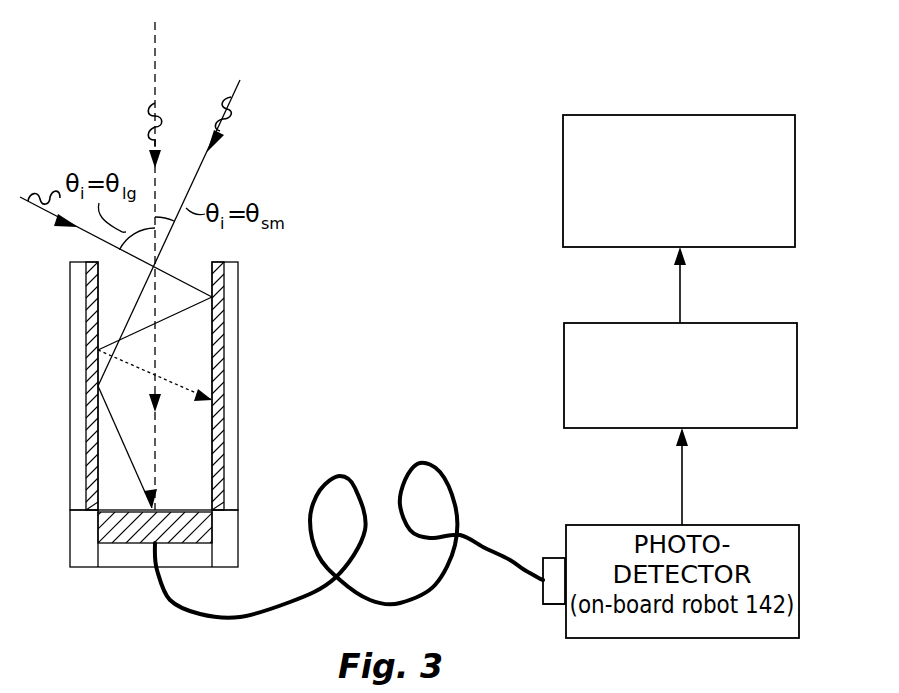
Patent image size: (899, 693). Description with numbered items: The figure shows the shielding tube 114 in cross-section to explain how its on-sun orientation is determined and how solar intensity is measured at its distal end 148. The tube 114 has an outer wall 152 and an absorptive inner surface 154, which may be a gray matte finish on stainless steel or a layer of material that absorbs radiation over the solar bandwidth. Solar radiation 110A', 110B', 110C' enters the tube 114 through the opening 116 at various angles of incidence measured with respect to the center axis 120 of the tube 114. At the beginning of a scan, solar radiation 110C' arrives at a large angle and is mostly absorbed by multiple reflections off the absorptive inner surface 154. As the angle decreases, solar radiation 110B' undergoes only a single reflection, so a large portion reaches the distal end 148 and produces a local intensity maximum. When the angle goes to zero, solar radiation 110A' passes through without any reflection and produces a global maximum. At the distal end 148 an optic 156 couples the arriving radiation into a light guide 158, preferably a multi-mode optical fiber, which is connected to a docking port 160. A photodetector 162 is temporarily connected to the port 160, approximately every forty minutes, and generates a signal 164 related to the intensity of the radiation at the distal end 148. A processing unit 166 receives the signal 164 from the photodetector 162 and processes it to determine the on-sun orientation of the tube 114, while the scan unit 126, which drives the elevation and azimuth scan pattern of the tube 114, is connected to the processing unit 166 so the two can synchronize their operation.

The shielding tube 114 is at (352, 358).
The center axis 120 is at (153, 70).
The solar radiation at zero angle of incidence 110A' is at (187, 98).
The solar radiation at small angle of incidence 110B' is at (211, 294).
The solar radiation at large angle of incidence 110C' is at (113, 264).
The opening 116 is at (195, 378).
The outer wall 152 is at (240, 385).
The absorptive inner surface 154 is at (220, 325).
The distal end 148 is at (70, 538).
The optic 156 is at (117, 543).
The light guide 158 is at (420, 463).
The port 160 is at (543, 559).
The photodetector 162 is at (546, 603).
The signal 164 is at (673, 510).
The processing unit 166 is at (564, 340).
The scan unit 126 is at (563, 140).